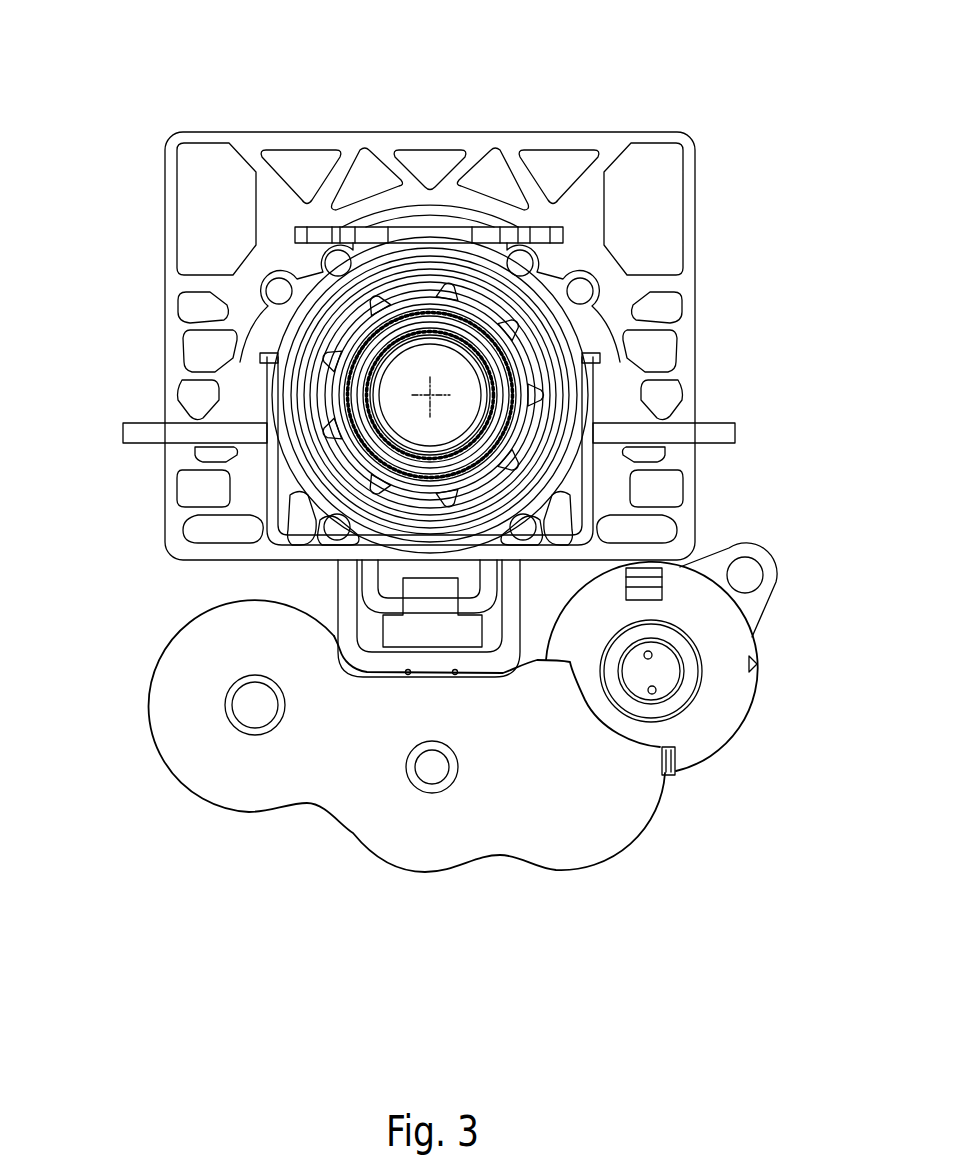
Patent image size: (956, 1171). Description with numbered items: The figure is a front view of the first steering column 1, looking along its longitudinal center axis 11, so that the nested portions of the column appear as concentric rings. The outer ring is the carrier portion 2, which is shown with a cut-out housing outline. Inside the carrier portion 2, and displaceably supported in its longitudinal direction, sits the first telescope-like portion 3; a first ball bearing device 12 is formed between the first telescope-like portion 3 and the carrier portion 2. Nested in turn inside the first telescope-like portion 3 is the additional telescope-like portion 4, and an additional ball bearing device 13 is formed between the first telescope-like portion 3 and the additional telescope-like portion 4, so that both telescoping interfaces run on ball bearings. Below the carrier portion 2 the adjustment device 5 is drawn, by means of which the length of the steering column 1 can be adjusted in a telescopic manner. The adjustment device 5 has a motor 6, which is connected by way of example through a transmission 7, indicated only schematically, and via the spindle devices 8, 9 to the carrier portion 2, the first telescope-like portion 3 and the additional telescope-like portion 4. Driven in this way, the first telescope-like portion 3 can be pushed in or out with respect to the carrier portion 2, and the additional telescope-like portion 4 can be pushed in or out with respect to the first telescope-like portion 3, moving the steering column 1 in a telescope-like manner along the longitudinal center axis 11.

The steering column 1 is at (676, 73).
The carrier portion 2 is at (245, 132).
The first telescope-like portion 3 is at (278, 323).
The additional telescope-like portion 4 is at (268, 353).
The adjustment device 5 is at (673, 855).
The motor 6 is at (723, 713).
The transmission 7 is at (525, 882).
The spindle device 8 is at (358, 822).
The spindle device 9 is at (228, 722).
The longitudinal center axis 11 is at (430, 395).
The first ball bearing device 12 is at (256, 280).
The additional ball bearing device 13 is at (318, 258).